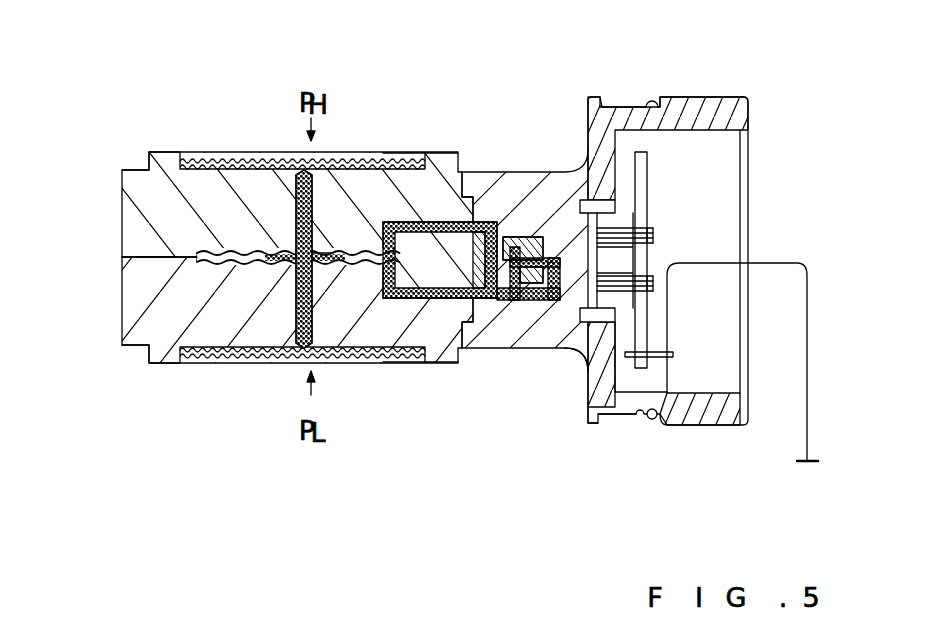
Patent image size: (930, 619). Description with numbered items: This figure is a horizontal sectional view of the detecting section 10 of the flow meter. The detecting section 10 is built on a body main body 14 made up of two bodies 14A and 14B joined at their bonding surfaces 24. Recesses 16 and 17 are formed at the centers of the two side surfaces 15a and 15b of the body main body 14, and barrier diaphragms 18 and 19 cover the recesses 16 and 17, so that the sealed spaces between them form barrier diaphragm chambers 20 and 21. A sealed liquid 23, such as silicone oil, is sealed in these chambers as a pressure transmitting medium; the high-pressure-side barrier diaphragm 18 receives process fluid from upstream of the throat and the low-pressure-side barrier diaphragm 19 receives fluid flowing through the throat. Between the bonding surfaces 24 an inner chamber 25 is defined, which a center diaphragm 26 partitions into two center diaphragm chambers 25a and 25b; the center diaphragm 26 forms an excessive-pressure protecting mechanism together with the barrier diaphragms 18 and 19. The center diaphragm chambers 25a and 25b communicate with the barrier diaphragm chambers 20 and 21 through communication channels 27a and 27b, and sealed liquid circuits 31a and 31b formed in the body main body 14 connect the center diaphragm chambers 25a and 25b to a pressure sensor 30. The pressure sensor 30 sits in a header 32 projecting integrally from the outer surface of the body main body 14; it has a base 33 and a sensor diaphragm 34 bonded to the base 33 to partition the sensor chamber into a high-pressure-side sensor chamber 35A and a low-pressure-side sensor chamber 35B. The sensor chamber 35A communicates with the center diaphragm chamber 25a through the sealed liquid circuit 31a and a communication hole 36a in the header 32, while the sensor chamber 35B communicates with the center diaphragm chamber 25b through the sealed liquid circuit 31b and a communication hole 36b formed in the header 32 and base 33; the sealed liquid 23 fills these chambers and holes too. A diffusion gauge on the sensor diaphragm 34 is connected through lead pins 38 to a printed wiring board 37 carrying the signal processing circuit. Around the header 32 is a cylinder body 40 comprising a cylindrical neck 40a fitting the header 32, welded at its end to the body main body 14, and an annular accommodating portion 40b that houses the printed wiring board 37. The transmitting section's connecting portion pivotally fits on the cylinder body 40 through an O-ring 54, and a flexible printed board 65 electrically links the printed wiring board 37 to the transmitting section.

The detecting section 10 is at (157, 62).
The body main body 14 is at (42, 212).
The body 14A is at (122, 226).
The body 14B is at (122, 271).
The side surface 15a is at (165, 152).
The side surface 15b is at (160, 364).
The recess 16 is at (190, 157).
The recess 17 is at (188, 358).
The barrier diaphragm 18 is at (386, 157).
The barrier diaphragm 19 is at (384, 358).
The barrier diaphragm chamber 20 is at (406, 157).
The barrier diaphragm chamber 21 is at (398, 360).
The sealed liquid 23 is at (296, 200).
The bonding surface 24 is at (170, 259).
The inner chamber 25 is at (301, 384).
The center diaphragm chamber 25a is at (357, 264).
The center diaphragm chamber 25b is at (330, 264).
The center diaphragm 26 is at (322, 248).
The communication channel 27a is at (314, 190).
The communication channel 27b is at (278, 297).
The pressure sensor 30 is at (503, 290).
The sealed liquid circuit 31a is at (447, 221).
The sealed liquid circuit 31b is at (438, 300).
The header 32 is at (578, 323).
The base 33 is at (602, 422).
The sensor diaphragm 34 is at (491, 300).
The sensor chamber 35A is at (506, 230).
The sensor chamber 35B is at (524, 232).
The communication hole 36a is at (504, 234).
The communication hole 36b is at (542, 232).
The printed wiring board 37 is at (643, 182).
The lead pin 38 is at (653, 243).
The cylinder body 40 is at (730, 90).
The neck 40a is at (543, 346).
The accommodating portion 40b is at (722, 412).
The O-ring 54 is at (654, 426).
The flexible printed board 65 is at (713, 263).